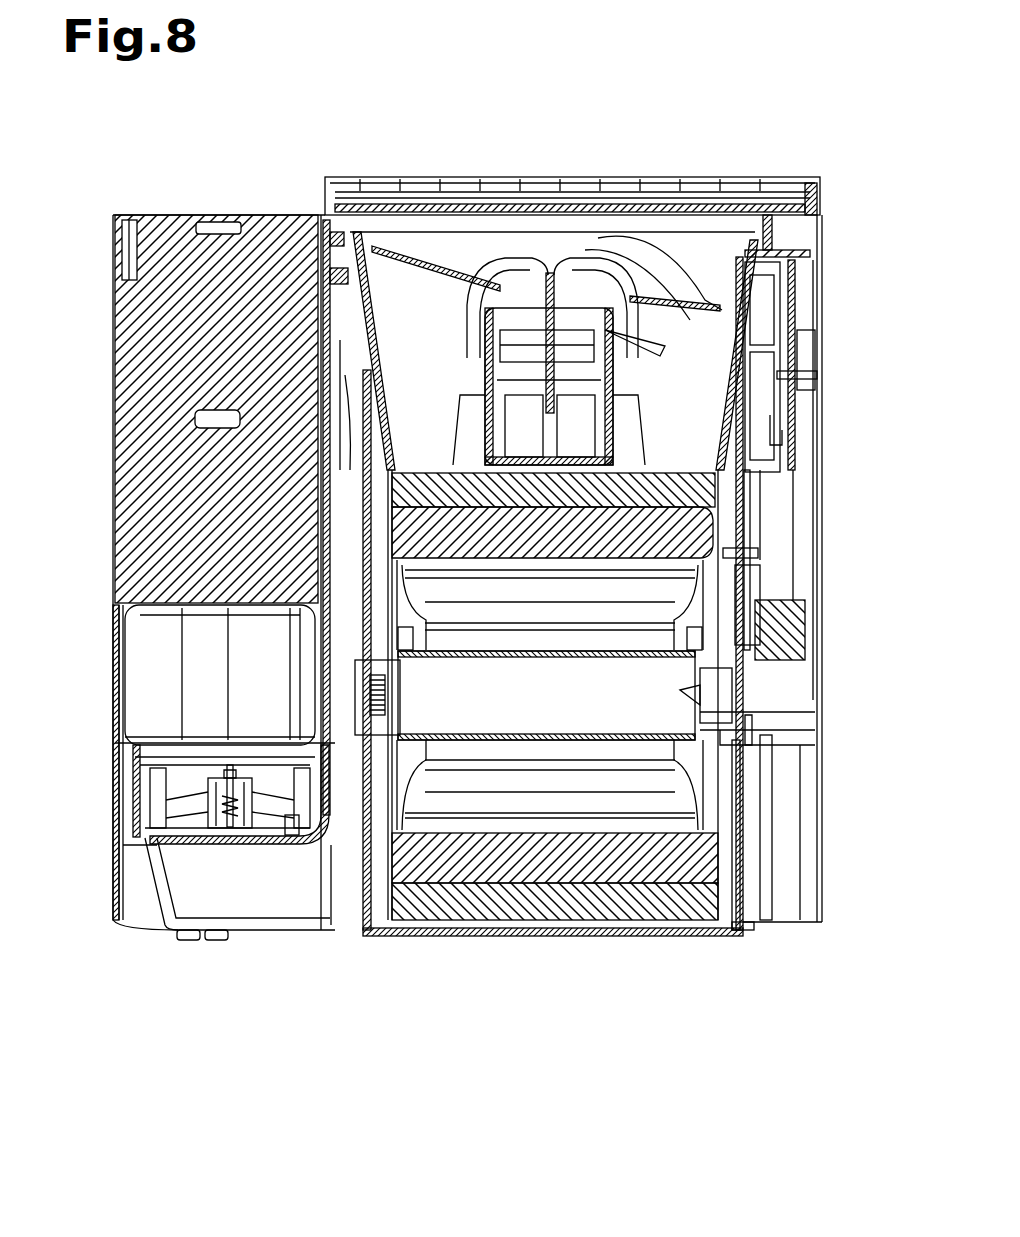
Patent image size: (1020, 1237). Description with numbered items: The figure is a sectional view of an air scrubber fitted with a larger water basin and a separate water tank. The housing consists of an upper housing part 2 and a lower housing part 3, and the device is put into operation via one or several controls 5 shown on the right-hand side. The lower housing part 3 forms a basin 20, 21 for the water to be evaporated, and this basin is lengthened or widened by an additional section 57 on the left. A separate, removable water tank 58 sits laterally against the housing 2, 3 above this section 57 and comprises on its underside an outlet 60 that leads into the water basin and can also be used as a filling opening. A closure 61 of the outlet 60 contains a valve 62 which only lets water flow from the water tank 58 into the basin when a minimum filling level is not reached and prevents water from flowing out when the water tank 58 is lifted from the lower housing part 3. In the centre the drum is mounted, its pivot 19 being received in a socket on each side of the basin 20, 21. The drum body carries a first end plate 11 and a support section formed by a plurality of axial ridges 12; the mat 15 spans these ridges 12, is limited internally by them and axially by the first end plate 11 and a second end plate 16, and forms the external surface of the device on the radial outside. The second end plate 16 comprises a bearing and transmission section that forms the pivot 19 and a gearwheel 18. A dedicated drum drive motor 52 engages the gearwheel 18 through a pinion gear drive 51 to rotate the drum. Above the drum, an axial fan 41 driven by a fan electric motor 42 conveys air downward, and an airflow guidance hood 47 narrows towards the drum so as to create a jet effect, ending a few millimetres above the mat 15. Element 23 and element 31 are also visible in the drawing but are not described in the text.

The upper housing part 2 is at (822, 205).
The lower housing part 3 is at (822, 845).
The controls 5 is at (800, 345).
The first end plate 11 is at (420, 492).
The axial ridges 12 is at (330, 640).
The mat 15 is at (700, 483).
The second end plate 16 is at (740, 508).
The gearwheel 18 is at (350, 660).
The pivot 19 is at (817, 712).
The basin 20 is at (733, 845).
The basin 21 is at (770, 805).
The bracket 23 is at (752, 725).
The lid 31 is at (483, 182).
The fan 41 is at (627, 232).
The fan electric motor 42 is at (497, 320).
The airflow guidance hood 47 is at (745, 440).
The pinion gear drive 51 is at (745, 575).
The drum drive motor 52 is at (790, 595).
The additional section 57 is at (160, 900).
The water tank 58 is at (165, 355).
The outlet 60 is at (292, 832).
The closure 61 is at (145, 792).
The valve 62 is at (133, 828).